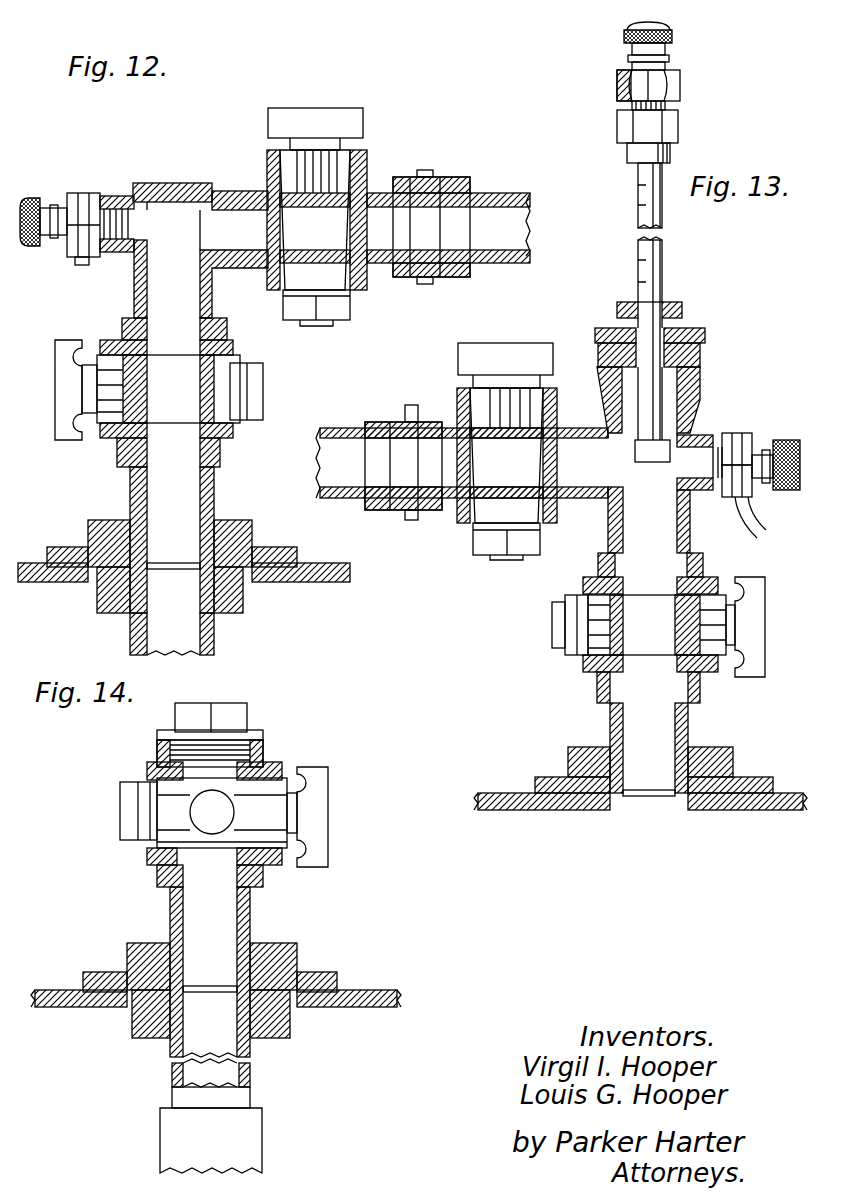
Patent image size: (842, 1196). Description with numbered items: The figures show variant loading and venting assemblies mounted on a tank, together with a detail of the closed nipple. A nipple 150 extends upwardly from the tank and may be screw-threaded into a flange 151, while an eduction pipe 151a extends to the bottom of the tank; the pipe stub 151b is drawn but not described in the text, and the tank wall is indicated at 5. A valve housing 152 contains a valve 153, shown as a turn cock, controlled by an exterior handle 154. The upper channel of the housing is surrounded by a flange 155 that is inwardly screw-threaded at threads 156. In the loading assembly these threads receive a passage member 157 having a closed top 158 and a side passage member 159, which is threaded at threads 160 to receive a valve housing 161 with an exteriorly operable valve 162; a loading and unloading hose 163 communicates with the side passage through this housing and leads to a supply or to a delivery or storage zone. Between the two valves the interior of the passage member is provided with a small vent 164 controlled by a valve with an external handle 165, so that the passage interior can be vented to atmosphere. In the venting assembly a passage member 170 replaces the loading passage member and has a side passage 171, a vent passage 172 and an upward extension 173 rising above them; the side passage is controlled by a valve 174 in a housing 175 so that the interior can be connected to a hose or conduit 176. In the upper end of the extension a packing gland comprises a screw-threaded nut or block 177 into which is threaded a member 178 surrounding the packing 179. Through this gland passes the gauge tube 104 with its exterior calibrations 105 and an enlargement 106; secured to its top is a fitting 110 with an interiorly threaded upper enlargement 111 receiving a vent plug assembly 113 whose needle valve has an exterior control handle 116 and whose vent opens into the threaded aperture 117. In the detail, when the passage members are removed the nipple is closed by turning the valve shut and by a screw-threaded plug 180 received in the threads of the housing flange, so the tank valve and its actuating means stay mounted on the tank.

In FIG. 12, the floor plate 5 is at (29, 566).
In FIG. 13, the floor plate 5 is at (508, 797).
In FIG. 14, the floor plate 5 is at (367, 992).
In FIG. 13, the gauge tube 104 is at (660, 247).
In FIG. 13, the calibrations 105 is at (645, 250).
In FIG. 13, the enlargement 106 is at (672, 450).
In FIG. 13, the fitting 110 is at (627, 155).
In FIG. 13, the upper enlargement 111 is at (678, 127).
In FIG. 13, the vent plug assembly 113 is at (668, 86).
In FIG. 13, the exterior control handle 116 is at (672, 34).
In FIG. 13, the interiorly screw-threaded aperture 117 is at (617, 87).
In FIG. 12, the nipple 150 is at (135, 491).
In FIG. 13, the nipple 150 is at (680, 726).
In FIG. 14, the nipple 150 is at (173, 903).
In FIG. 12, the flange 151 is at (95, 530).
In FIG. 13, the flange 151 is at (733, 762).
In FIG. 14, the flange 151 is at (130, 951).
In FIG. 12, the eduction pipe 151a is at (213, 634).
In FIG. 14, the eduction pipe 151a is at (170, 1091).
In FIG. 14, the pipe end block 151b is at (165, 1126).
In FIG. 12, the valve housing 152 is at (115, 340).
In FIG. 13, the valve housing 152 is at (700, 672).
In FIG. 14, the valve housing 152 is at (287, 768).
In FIG. 12, the valve 153 is at (115, 373).
In FIG. 13, the valve 153 is at (712, 620).
In FIG. 14, the valve 153 is at (268, 806).
In FIG. 12, the exterior handle 154 is at (62, 352).
In FIG. 13, the exterior handle 154 is at (755, 679).
In FIG. 14, the exterior handle 154 is at (323, 844).
In FIG. 12, the flange 155 is at (125, 322).
In FIG. 13, the flange 155 is at (598, 563).
In FIG. 14, the flange 155 is at (264, 753).
In FIG. 12, the screw threads 156 is at (215, 324).
In FIG. 13, the screw threads 156 is at (703, 561).
In FIG. 14, the screw threads 156 is at (157, 748).
In FIG. 12, the passage member 157 is at (182, 282).
In FIG. 12, the closed top 158 is at (152, 183).
In FIG. 12, the side passage member 159 is at (195, 210).
In FIG. 12, the screw threads 160 is at (231, 200).
In FIG. 12, the valve housing 161 is at (367, 193).
In FIG. 12, the valve 162 is at (307, 160).
In FIG. 12, the loading and unloading hose 163 is at (497, 195).
In FIG. 12, the vent 164 is at (75, 263).
In FIG. 12, the external handle 165 is at (32, 198).
In FIG. 13, the passage member 170 is at (690, 537).
In FIG. 13, the side passage 171 is at (597, 447).
In FIG. 13, the vent passage 172 is at (757, 538).
In FIG. 13, the upward extension 173 is at (690, 396).
In FIG. 13, the valve 174 is at (490, 405).
In FIG. 13, the housing 175 is at (463, 503).
In FIG. 13, the hose or conduit 176 is at (336, 445).
In FIG. 13, the screw-threaded nut or block 177 is at (700, 356).
In FIG. 13, the member 178 is at (679, 305).
In FIG. 13, the packing 179 is at (705, 336).
In FIG. 14, the screw-threaded plug 180 is at (224, 734).